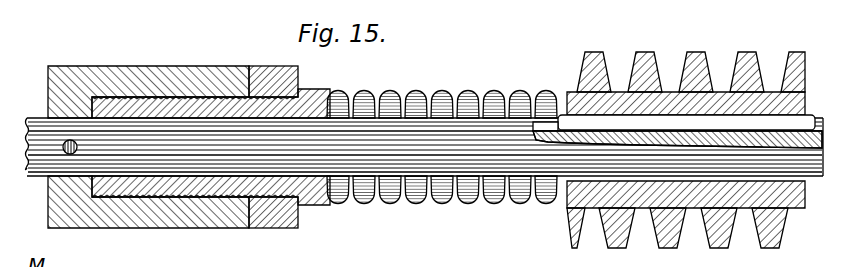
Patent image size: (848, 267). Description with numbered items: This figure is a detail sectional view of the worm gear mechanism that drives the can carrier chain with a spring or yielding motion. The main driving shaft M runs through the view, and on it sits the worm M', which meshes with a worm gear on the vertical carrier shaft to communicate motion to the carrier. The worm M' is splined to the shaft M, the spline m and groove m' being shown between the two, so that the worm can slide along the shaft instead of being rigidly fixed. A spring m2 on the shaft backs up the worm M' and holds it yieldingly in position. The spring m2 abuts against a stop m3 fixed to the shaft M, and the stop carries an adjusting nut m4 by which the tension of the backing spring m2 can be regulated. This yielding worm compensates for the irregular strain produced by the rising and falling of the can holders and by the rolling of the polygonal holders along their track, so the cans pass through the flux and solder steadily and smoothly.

The main driving shaft M is at (425, 147).
The worm M' is at (686, 135).
The spline m is at (686, 124).
The groove m' is at (677, 102).
The spring m2 is at (437, 76).
The stop m3 is at (199, 222).
The adjusting nut m4 is at (310, 207).